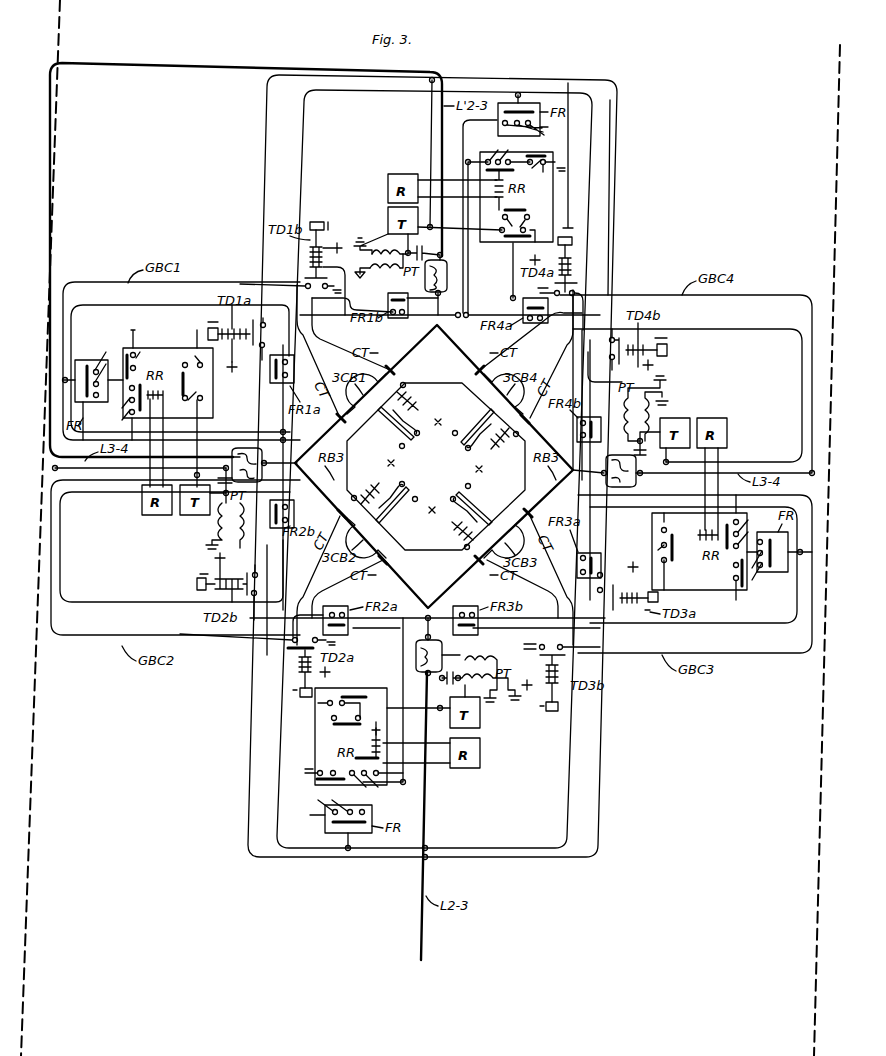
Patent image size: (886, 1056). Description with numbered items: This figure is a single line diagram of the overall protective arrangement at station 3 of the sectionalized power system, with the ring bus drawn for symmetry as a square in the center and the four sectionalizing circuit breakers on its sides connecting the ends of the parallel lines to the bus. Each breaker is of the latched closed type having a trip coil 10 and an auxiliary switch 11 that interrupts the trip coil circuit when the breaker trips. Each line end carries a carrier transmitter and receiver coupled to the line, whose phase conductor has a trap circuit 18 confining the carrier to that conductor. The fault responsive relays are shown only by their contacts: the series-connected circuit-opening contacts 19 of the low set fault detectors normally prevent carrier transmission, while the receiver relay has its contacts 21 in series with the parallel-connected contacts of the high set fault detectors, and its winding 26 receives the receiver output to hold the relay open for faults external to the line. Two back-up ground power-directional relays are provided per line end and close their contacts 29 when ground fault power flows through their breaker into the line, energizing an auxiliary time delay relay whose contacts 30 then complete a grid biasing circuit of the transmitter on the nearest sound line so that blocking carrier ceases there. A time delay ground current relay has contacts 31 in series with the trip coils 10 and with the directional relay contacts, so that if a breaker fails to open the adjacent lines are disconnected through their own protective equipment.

The station 3 is at (434, 466).
The trip coil 10 is at (418, 402).
The auxiliary switch 11 is at (416, 441).
The trap circuit 18 is at (646, 484).
The circuit-opening contacts of the low set fault detectors 19 is at (503, 218).
The contacts of the receiver relay RR 21 is at (496, 156).
The winding of the receiver relay 26 is at (377, 727).
The contacts of the fault responsive relays 29 is at (399, 320).
The contacts of the time delay relay 30 is at (575, 296).
The contacts of the time delay ground current relay FR 31 is at (540, 128).